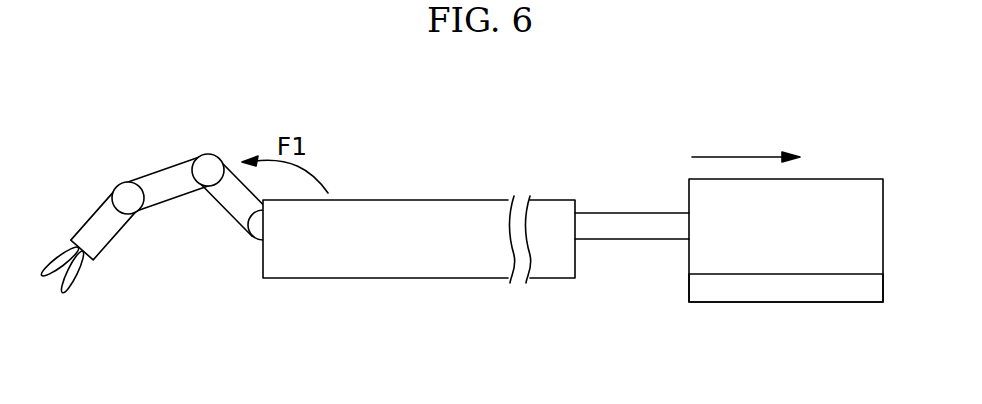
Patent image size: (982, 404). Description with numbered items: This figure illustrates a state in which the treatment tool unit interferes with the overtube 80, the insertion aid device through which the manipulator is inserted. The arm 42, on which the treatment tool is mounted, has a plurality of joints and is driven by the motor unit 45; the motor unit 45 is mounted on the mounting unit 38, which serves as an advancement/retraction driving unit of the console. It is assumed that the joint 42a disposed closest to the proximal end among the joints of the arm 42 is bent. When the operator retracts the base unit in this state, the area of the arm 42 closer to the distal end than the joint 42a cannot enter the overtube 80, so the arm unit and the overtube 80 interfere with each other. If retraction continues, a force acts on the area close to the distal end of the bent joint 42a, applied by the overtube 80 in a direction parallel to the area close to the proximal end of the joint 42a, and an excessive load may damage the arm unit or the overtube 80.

The arm 42 is at (168, 175).
The joint 42a is at (252, 237).
The overtube 80 is at (432, 205).
The motor unit 45 is at (842, 188).
The mounting unit 38 is at (750, 297).